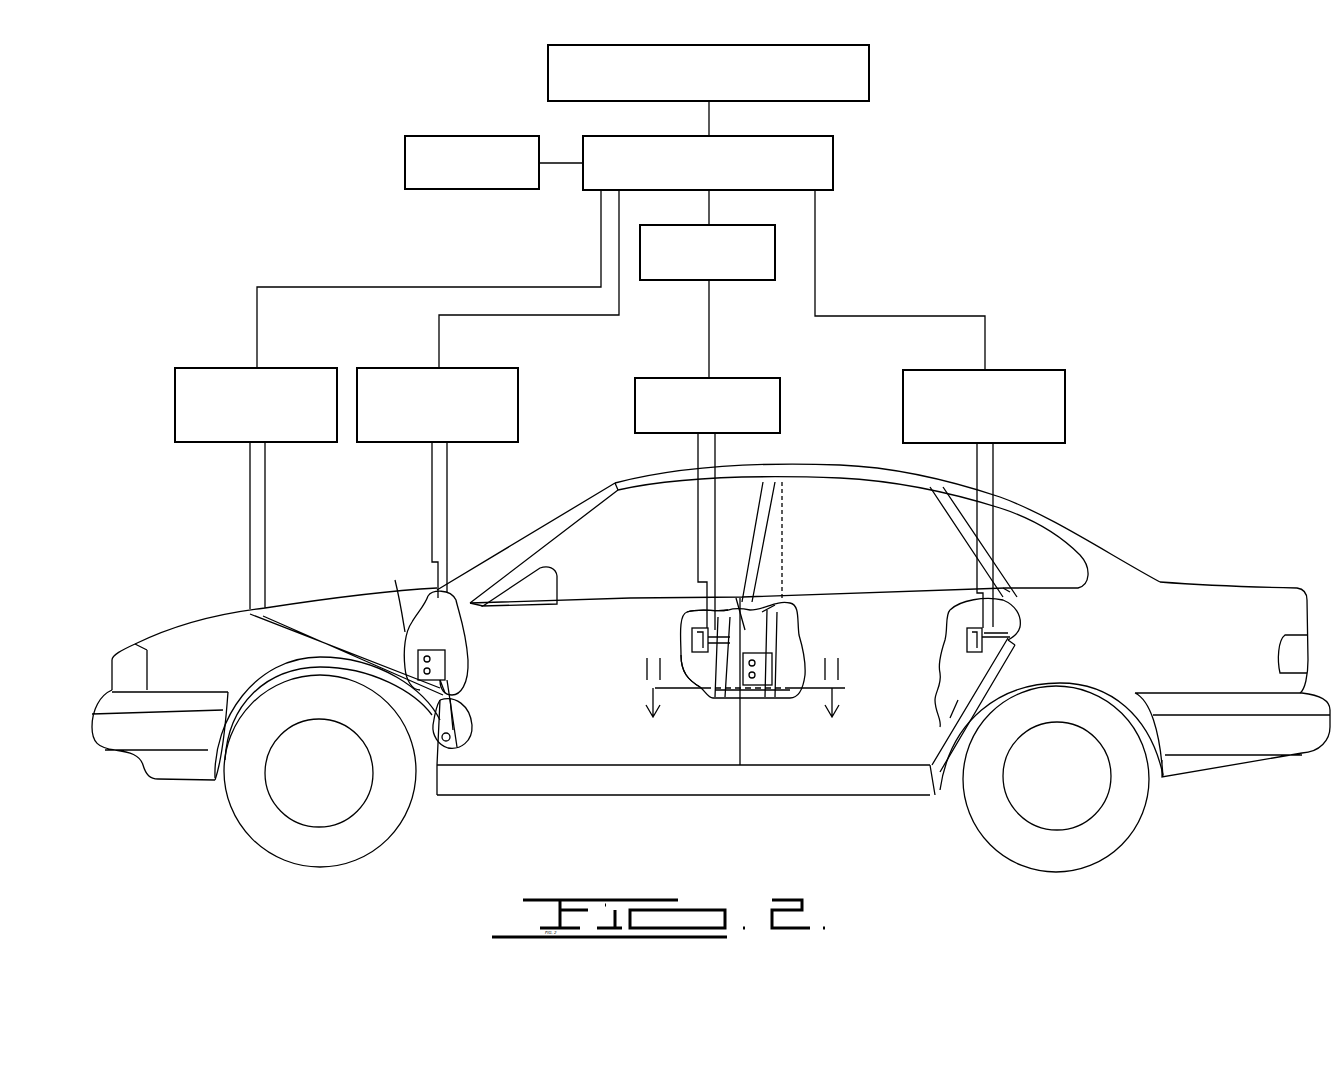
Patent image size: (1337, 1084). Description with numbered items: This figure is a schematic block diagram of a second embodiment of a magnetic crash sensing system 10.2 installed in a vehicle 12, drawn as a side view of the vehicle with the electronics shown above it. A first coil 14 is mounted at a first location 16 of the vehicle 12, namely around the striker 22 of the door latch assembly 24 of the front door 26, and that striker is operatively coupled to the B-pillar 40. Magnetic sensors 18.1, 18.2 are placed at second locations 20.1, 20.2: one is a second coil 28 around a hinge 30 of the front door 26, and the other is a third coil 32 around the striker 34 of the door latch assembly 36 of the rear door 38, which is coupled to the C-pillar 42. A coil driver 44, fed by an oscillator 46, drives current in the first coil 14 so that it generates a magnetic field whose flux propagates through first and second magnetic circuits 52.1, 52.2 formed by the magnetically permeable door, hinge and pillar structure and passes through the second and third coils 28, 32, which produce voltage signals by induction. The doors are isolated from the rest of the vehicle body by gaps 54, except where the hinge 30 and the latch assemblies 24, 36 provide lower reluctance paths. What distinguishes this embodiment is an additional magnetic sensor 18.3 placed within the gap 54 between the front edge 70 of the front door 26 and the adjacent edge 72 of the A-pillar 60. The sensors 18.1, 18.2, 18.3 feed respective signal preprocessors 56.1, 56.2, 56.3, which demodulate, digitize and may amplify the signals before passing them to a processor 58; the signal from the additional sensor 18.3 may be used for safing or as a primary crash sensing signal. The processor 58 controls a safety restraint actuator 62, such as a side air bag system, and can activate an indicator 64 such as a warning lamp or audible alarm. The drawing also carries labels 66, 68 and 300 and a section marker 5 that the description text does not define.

The magnetic crash sensing system 10.2 is at (1136, 244).
The vehicle 12 is at (1220, 584).
The first coil 14 is at (690, 630).
The first location 16 is at (711, 715).
The magnetic sensor 18.1 is at (467, 635).
The magnetic sensor 18.2 is at (1041, 639).
The additional magnetic sensor 18.3 is at (475, 710).
The second location 20.1 is at (466, 540).
The second location 20.2 is at (1022, 557).
The striker 22 is at (688, 647).
The door latch assembly 24 is at (648, 622).
The front door 26 is at (592, 757).
The second coil 28 is at (409, 637).
The hinge 30 is at (417, 668).
The third coil 32 is at (1008, 636).
The striker 34 is at (963, 622).
The door latch assembly 36 is at (953, 669).
The rear door 38 is at (897, 640).
The B-pillar 40 is at (753, 608).
The C-pillar 42 is at (983, 702).
The coil driver 44 is at (745, 385).
The oscillator 46 is at (670, 275).
The section line 5- 5 is at (730, 703).
The first magnetic circuit 52.1 is at (568, 813).
The second magnetic circuit 52.2 is at (879, 827).
The gaps 54 is at (470, 755).
The signal preprocessor 56.1 is at (490, 388).
The signal preprocessor 56.2 is at (1043, 395).
The signal preprocessor 56.3 is at (300, 385).
The processor 58 is at (822, 163).
The A-pillar 60 is at (435, 750).
The safety restraint actuator 62 is at (862, 79).
The indicator 64 is at (488, 183).
The electrode 66 is at (700, 640).
The electrode 68 is at (974, 640).
The front edge 70 is at (468, 690).
The adjacent edge 72 is at (433, 725).
The occupant sensor 300 is at (334, 578).